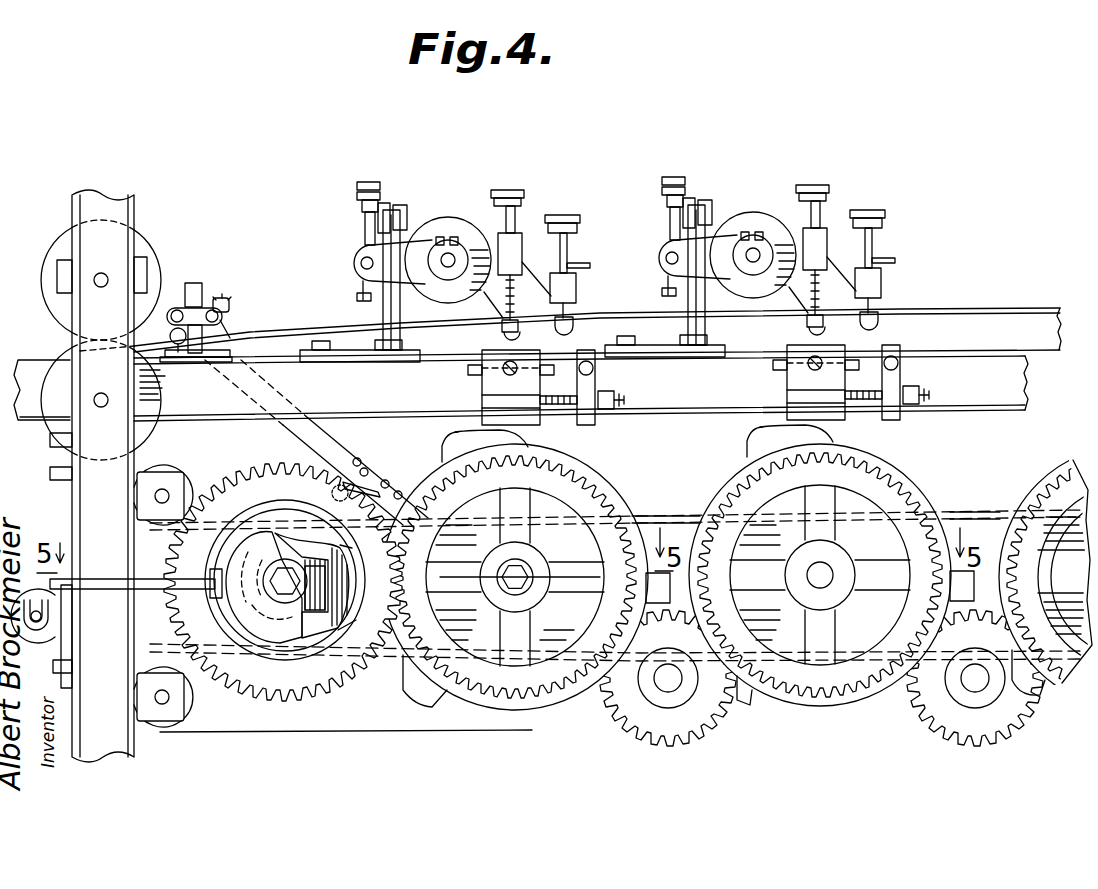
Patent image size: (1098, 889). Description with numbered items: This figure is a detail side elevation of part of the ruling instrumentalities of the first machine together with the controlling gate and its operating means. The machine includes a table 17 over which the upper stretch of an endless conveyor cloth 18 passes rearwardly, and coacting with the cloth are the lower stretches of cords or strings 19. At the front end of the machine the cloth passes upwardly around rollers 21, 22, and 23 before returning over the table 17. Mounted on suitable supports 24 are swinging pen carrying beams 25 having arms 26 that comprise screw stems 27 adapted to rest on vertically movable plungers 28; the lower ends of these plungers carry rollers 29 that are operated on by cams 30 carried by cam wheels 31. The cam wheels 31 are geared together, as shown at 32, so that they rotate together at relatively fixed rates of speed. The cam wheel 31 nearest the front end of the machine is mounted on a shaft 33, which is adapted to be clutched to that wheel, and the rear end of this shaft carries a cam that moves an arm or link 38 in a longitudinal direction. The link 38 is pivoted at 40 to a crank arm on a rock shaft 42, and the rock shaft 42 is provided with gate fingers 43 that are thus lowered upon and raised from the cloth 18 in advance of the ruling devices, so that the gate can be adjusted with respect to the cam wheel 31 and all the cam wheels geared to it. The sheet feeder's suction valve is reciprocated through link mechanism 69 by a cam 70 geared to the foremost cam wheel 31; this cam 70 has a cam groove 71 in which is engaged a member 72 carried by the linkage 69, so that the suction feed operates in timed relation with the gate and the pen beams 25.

The table 17 is at (300, 361).
The endless conveyor cloth 18 is at (251, 345).
The cords or strings 19 is at (42, 262).
The roller 21 is at (188, 700).
The roller 22 is at (242, 484).
The roller 23 is at (162, 415).
The supports 24 is at (385, 310).
The pen carrying beams 25 is at (440, 258).
The arms 26 is at (498, 248).
The screw stems 27 is at (526, 215).
The plungers 28 is at (492, 345).
The rollers 29 is at (512, 432).
The cams 30 is at (450, 440).
The cam wheels 31 is at (602, 485).
The gearing 32 is at (620, 680).
The shaft 33 is at (527, 570).
The arm 38 is at (368, 449).
The pivot 40 is at (183, 340).
The rock shaft 42 is at (208, 300).
The gate fingers 43 is at (228, 320).
The link mechanism 69 is at (108, 590).
The cam 70 is at (290, 530).
The cam groove 71 is at (337, 612).
The member 72 is at (237, 595).